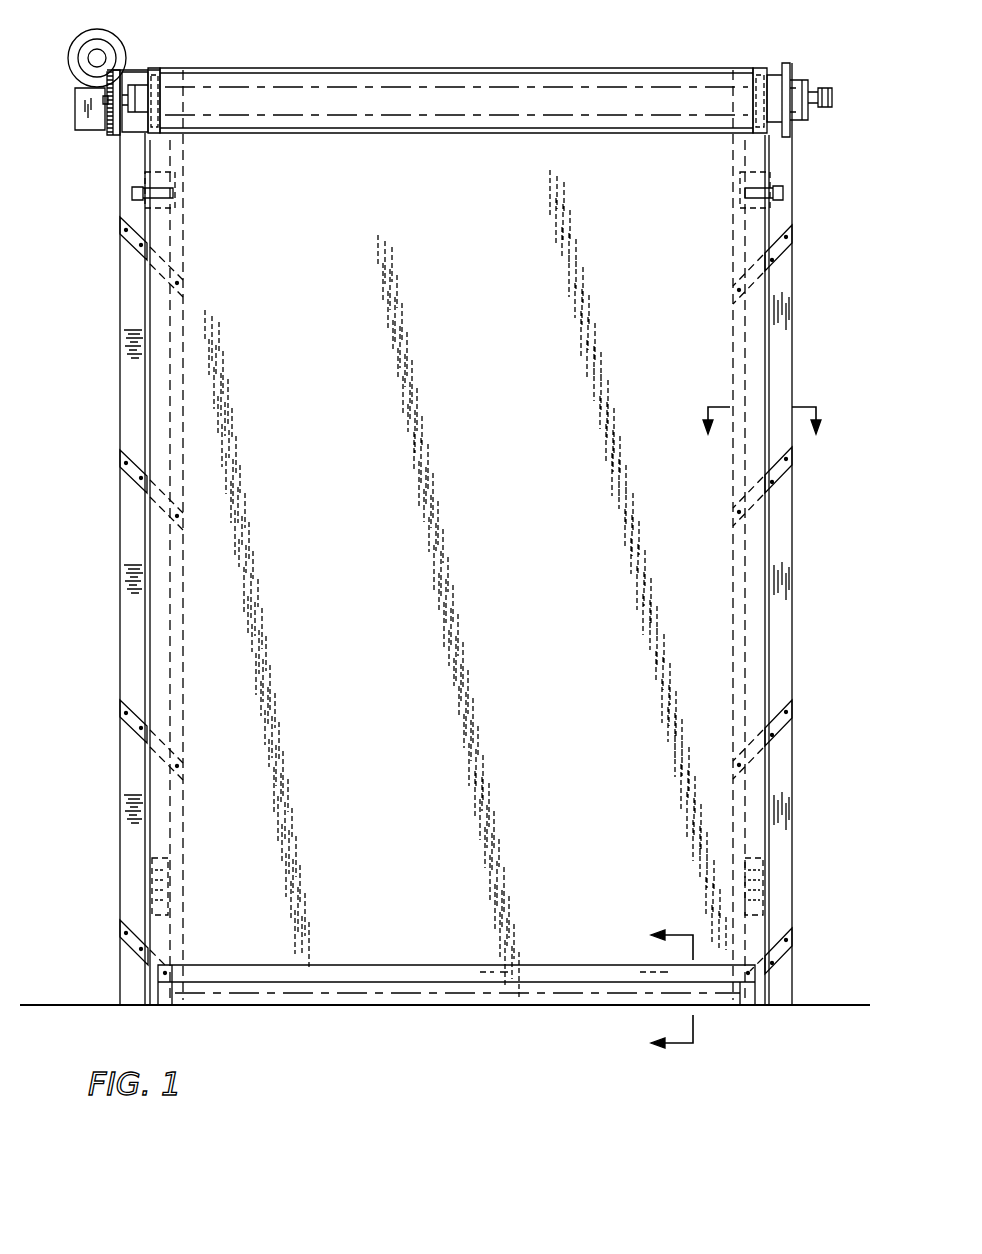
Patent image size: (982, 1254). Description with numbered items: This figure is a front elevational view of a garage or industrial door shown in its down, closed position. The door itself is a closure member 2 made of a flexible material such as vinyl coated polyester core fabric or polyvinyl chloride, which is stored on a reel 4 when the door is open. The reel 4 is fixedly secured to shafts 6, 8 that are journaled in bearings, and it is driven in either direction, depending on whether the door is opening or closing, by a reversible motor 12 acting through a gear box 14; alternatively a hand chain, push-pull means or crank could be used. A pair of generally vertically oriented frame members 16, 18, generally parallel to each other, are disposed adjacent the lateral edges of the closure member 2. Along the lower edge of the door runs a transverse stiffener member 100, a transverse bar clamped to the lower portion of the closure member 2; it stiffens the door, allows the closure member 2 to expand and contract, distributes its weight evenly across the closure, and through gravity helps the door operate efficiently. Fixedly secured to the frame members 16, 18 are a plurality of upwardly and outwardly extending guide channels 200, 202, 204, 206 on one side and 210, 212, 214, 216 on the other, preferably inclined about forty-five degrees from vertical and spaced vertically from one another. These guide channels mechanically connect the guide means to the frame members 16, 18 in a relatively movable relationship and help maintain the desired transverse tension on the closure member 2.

The closure member 2 is at (470, 572).
The reel 4 is at (724, 60).
The shaft 6 is at (133, 85).
The shaft 8 is at (786, 66).
The reversible motor 12 is at (122, 47).
The gear box 14 is at (93, 125).
The frame member 16 is at (792, 374).
The frame member 18 is at (122, 568).
The transverse stiffener member 100 is at (393, 965).
The guide channel 200 is at (787, 938).
The guide channel 202 is at (787, 718).
The guide channel 204 is at (780, 478).
The guide channel 206 is at (787, 240).
The guide channel 210 is at (128, 940).
The guide channel 212 is at (128, 730).
The guide channel 214 is at (128, 478).
The guide channel 216 is at (128, 246).